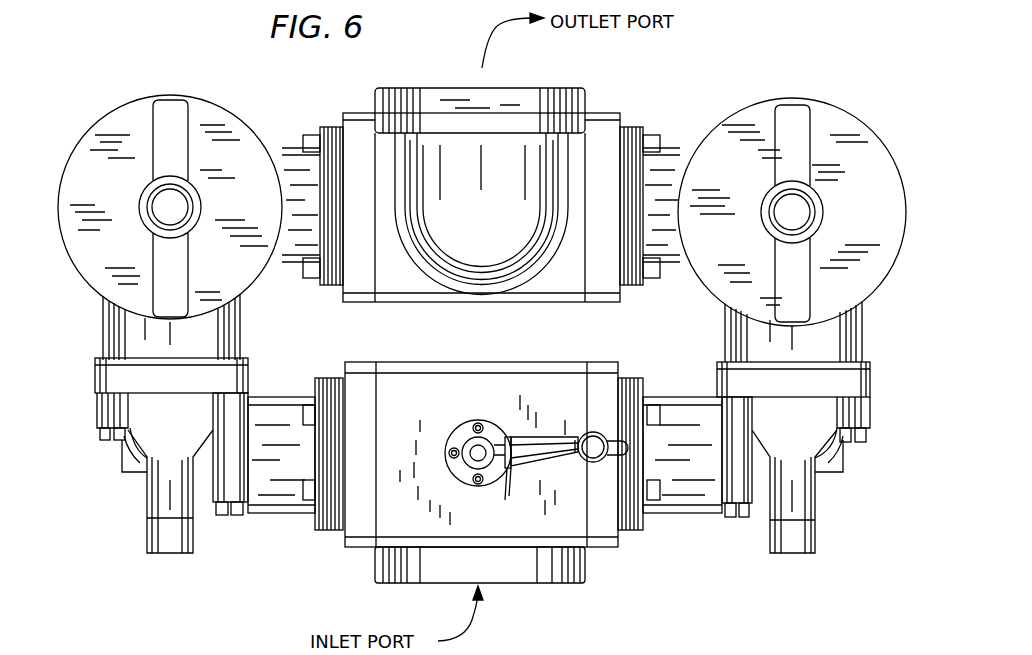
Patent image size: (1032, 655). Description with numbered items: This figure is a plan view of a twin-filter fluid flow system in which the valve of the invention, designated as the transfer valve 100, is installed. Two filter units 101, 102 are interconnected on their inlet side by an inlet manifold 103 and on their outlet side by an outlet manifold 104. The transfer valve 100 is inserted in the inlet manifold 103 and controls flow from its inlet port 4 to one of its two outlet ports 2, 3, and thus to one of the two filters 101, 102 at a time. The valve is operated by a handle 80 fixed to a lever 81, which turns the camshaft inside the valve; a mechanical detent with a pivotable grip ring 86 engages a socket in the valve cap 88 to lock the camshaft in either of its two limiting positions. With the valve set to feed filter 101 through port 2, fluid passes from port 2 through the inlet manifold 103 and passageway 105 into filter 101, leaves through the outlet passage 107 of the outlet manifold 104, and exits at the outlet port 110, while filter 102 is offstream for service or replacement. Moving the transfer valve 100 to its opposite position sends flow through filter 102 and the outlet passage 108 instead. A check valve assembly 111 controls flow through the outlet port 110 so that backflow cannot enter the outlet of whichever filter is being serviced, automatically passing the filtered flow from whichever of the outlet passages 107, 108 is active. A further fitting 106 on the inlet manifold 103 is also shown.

The outlet port 2 is at (643, 392).
The outlet port 3 is at (318, 384).
The inlet port 4 is at (527, 584).
The handle 80 is at (585, 462).
The lever 81 is at (535, 436).
The grip ring 86 is at (507, 472).
The valve cap 88 is at (458, 436).
The transfer valve 100 is at (332, 554).
The filter unit 101 is at (835, 122).
The filter unit 102 is at (118, 117).
The inlet manifold 103 is at (680, 504).
The outlet manifold 104 is at (674, 148).
The passageway 105 is at (830, 470).
The left drain branch 106 is at (137, 458).
The outlet passage 107 is at (680, 265).
The outlet passage 108 is at (283, 147).
The outlet port 110 is at (452, 86).
The check valve assembly 111 is at (398, 300).